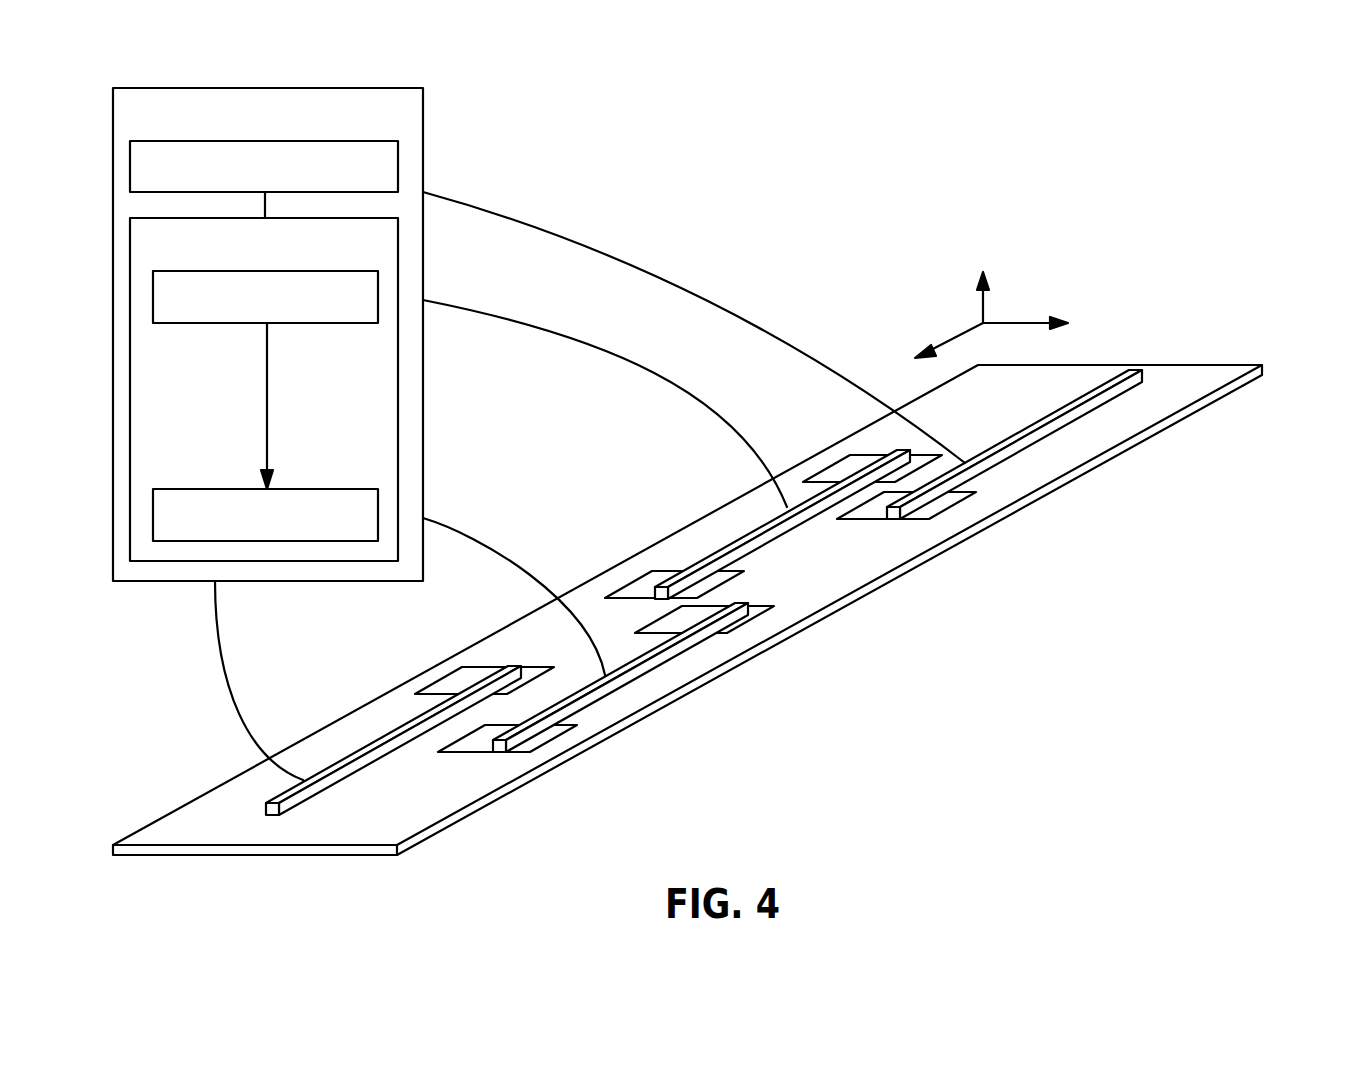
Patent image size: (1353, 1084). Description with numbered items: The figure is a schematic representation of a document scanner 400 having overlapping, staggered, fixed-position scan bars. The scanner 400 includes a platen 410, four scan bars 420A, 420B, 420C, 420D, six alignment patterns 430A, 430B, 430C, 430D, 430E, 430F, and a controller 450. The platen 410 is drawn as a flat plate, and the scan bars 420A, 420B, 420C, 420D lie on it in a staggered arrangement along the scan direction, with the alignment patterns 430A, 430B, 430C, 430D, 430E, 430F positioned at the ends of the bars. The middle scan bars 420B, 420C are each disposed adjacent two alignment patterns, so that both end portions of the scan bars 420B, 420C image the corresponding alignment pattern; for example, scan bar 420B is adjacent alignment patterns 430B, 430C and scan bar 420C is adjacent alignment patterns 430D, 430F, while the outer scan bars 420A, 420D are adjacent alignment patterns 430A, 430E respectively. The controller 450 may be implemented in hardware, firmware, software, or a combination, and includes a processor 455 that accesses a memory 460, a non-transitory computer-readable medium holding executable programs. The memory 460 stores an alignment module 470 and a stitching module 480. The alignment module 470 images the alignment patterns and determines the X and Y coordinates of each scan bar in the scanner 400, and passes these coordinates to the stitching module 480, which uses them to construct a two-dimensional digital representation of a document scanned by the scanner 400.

The scanner 400 is at (700, 471).
The platen 410 is at (1190, 365).
The scan bar 420A is at (377, 737).
The scan bar 420B is at (640, 675).
The scan bar 420C is at (733, 540).
The scan bar 420D is at (1080, 412).
The alignment pattern 430A is at (450, 673).
The alignment pattern 430B is at (552, 738).
The alignment pattern 430C is at (753, 612).
The alignment pattern 430D is at (623, 588).
The alignment pattern 430E is at (922, 519).
The alignment pattern 430F is at (847, 460).
The controller 450 is at (268, 334).
The processor 455 is at (264, 166).
The memory 460 is at (264, 389).
The alignment module 470 is at (265, 297).
The stitching module 480 is at (265, 515).